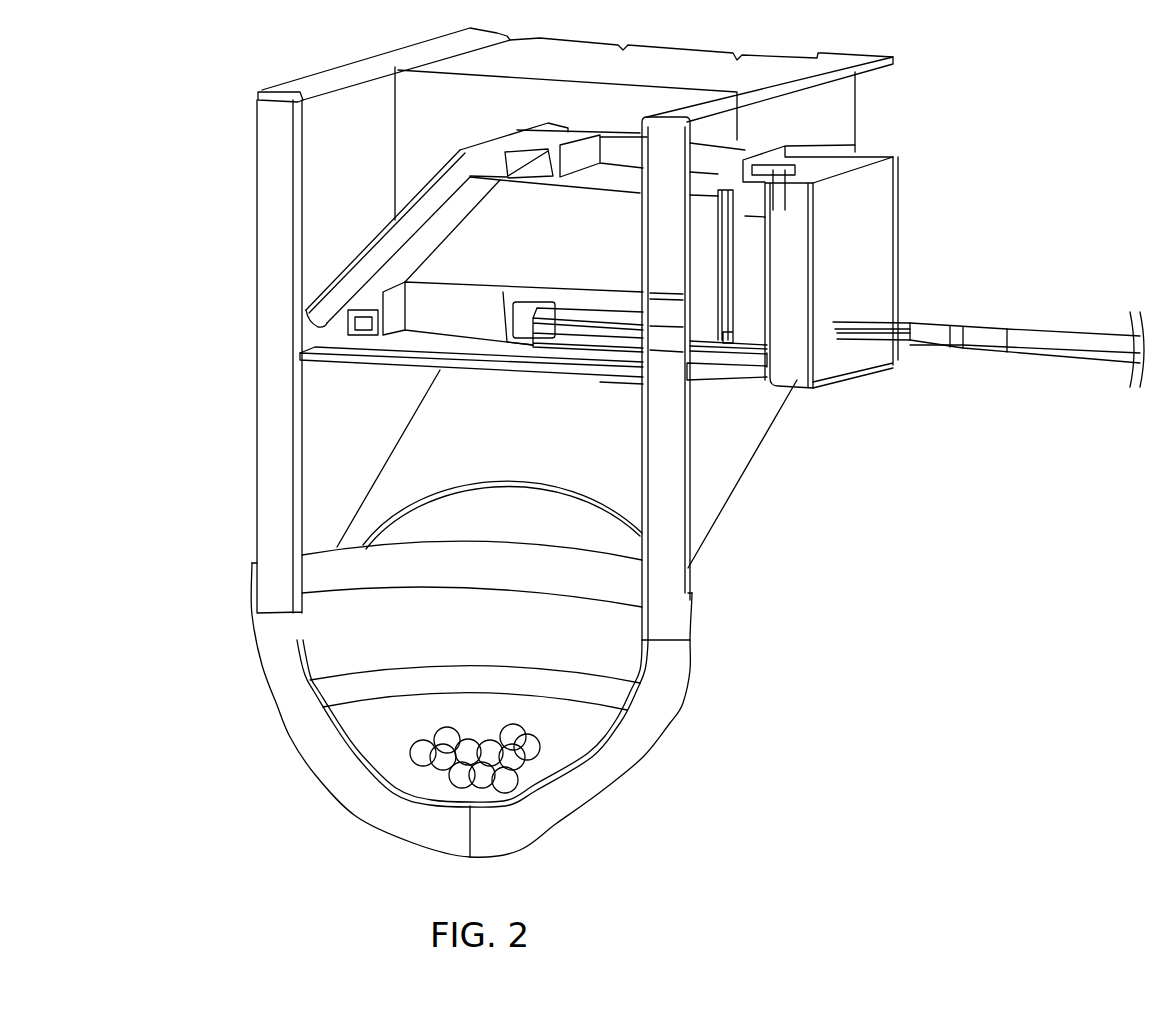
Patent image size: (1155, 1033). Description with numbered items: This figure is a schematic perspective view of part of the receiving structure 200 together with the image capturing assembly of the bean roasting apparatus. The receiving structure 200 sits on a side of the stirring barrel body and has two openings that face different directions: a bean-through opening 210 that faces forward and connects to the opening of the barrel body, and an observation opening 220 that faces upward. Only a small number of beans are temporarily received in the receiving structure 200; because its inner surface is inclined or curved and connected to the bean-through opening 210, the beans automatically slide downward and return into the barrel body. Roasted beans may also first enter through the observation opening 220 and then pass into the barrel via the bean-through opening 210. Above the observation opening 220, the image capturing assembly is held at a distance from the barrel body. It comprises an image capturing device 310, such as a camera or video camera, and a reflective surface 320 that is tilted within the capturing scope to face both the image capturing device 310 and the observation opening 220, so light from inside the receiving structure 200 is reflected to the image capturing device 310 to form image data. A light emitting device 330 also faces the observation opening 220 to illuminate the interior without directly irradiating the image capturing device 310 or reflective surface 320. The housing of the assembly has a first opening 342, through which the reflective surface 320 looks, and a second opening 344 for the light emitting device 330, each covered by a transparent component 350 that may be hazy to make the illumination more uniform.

The receiving structure 200 is at (657, 708).
The bean-through opening 210 is at (347, 750).
The observation opening 220 is at (422, 560).
The image capturing device 310 is at (750, 251).
The reflective surface 320 is at (424, 240).
The light emitting device 330 is at (622, 338).
The first opening 342 is at (383, 378).
The second opening 344 is at (603, 393).
The transparent component 350 is at (577, 355).